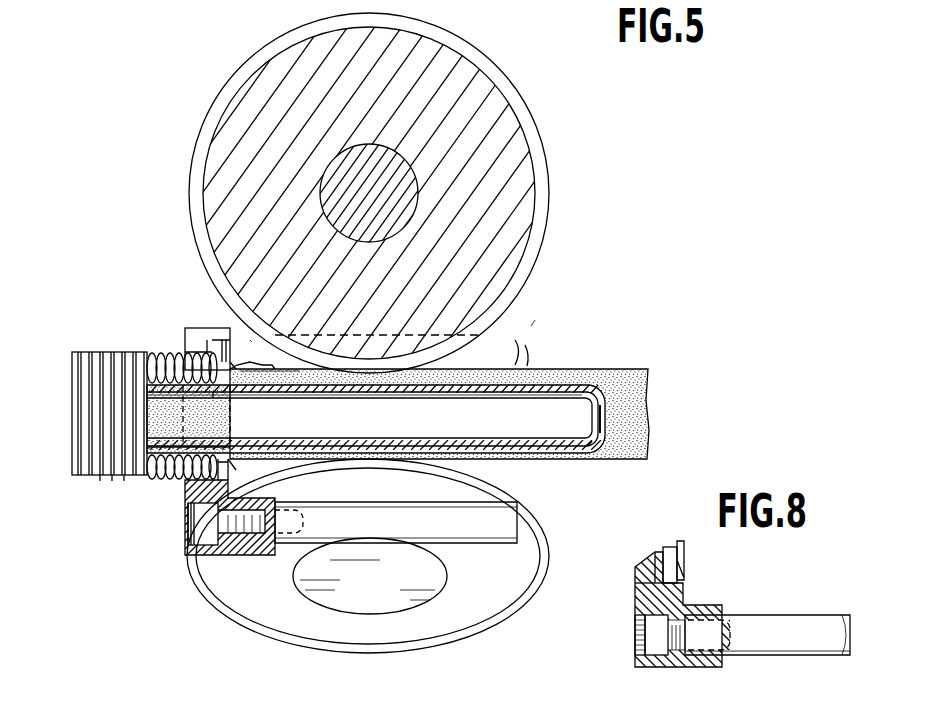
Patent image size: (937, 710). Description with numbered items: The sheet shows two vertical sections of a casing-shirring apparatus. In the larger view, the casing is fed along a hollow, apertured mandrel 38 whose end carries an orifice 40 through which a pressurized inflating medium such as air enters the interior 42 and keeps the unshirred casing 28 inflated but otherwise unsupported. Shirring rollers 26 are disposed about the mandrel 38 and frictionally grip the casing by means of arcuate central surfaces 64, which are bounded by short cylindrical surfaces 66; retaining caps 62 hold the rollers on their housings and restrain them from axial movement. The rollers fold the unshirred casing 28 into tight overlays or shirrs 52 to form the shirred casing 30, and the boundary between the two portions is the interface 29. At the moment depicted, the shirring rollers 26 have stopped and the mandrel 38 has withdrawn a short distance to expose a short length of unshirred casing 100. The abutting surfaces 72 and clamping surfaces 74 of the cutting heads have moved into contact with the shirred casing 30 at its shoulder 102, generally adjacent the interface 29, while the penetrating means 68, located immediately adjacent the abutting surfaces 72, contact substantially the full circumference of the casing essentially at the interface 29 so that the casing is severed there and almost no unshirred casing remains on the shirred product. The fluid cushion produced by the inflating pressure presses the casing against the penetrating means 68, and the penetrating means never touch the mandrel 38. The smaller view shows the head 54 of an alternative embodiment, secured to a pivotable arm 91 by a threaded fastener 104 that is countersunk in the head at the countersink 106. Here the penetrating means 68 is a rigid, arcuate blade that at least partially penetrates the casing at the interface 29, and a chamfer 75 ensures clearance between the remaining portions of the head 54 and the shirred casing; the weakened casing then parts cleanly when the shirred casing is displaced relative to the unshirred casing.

In FIG. 5, the shirring rollers 26 is at (528, 104).
In FIG. 5, the unshirred casing 28 is at (574, 369).
In FIG. 5, the interface 29 is at (262, 386).
In FIG. 5, the shirred casing 30 is at (80, 352).
In FIG. 5, the mandrel 38 is at (600, 448).
In FIG. 5, the orifice 40 is at (606, 421).
In FIG. 5, the interior 42 is at (349, 427).
In FIG. 5, the shirrs 52 is at (125, 482).
In FIG. 5, the head 54 is at (190, 328).
In FIG. 8, the head 54 is at (700, 667).
In FIG. 5, the retaining caps 62 is at (364, 598).
In FIG. 5, the arcuate central surfaces 64 is at (440, 45).
In FIG. 5, the short cylindrical surfaces 66 is at (481, 58).
In FIG. 5, the penetrating means 68 is at (237, 369).
In FIG. 8, the penetrating means 68 is at (680, 541).
In FIG. 5, the abutting surfaces 72 is at (228, 360).
In FIG. 8, the abutting surfaces 72 is at (665, 553).
In FIG. 5, the clamping surfaces 74 is at (207, 345).
In FIG. 8, the clamping surfaces 74 is at (657, 560).
In FIG. 5, the chamfer 75 is at (185, 352).
In FIG. 8, the chamfer 75 is at (640, 592).
In FIG. 5, the pivotable arm 91 is at (512, 340).
In FIG. 8, the pivotable arm 91 is at (805, 615).
In FIG. 5, the unshirred casing length 100 is at (288, 386).
In FIG. 5, the shoulder 102 is at (213, 393).
In FIG. 8, the threaded fastener 104 is at (648, 628).
In FIG. 8, the countersink 106 is at (636, 648).